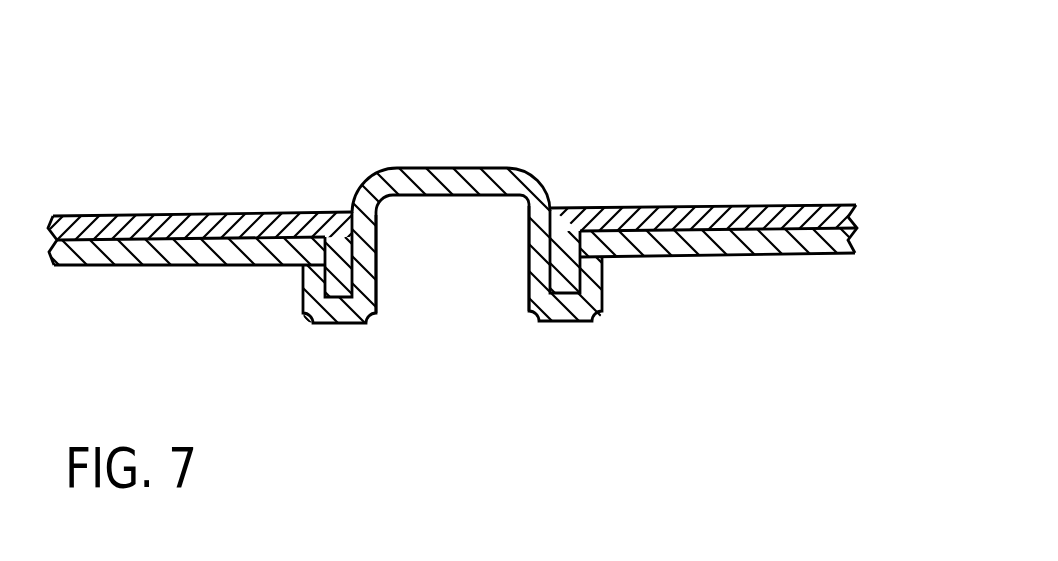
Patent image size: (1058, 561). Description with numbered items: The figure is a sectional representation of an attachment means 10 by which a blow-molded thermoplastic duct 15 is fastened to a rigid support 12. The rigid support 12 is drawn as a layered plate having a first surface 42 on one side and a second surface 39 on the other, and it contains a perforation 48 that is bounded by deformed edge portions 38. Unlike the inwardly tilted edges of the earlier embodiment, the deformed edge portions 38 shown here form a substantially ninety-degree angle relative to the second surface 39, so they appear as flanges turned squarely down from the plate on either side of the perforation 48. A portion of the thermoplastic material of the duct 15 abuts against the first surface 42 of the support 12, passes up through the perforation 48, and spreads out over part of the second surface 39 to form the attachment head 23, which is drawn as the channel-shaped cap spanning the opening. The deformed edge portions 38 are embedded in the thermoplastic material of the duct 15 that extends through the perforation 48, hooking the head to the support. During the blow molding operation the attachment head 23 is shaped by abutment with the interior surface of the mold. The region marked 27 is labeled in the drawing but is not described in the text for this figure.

The attachment means 10 is at (652, 108).
The rigid support 12 is at (115, 228).
The duct 15 is at (220, 266).
The attachment head 23 is at (465, 172).
The interior region 27 is at (677, 433).
The deformed edge portions 38 is at (865, 163).
The second surface 39 is at (292, 212).
The first surface 42 is at (113, 255).
The perforation 48 is at (428, 285).